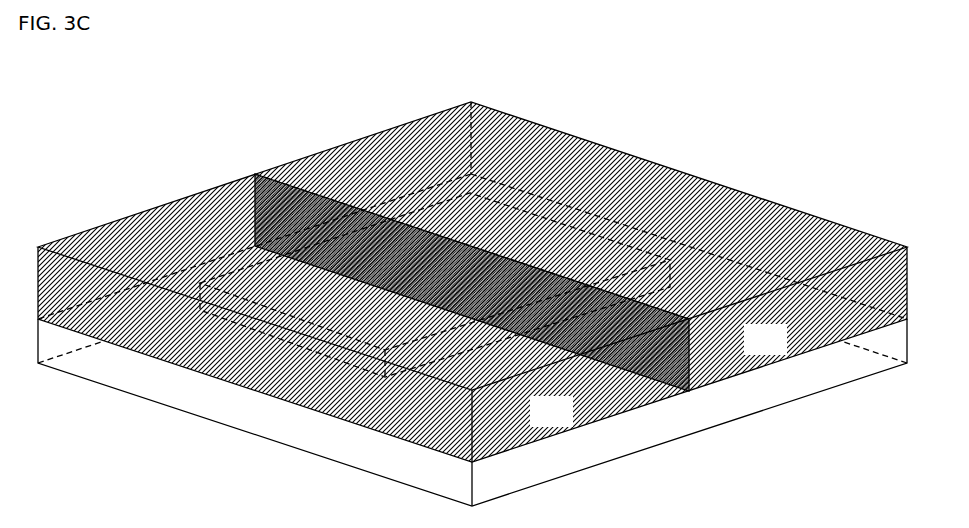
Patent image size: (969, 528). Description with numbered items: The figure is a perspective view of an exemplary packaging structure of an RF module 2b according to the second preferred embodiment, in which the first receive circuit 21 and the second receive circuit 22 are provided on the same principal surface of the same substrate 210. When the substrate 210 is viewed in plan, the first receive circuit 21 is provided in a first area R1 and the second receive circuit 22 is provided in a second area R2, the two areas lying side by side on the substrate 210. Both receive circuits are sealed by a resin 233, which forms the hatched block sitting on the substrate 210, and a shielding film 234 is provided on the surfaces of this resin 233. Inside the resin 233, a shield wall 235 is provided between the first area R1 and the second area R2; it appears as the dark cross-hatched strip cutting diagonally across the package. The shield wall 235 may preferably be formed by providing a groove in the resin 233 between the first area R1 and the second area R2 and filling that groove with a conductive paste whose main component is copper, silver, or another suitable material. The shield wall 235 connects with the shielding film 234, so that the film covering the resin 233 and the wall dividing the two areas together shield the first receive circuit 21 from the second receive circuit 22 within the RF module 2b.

The RF module 2b is at (472, 295).
The first receive circuit 21 is at (165, 216).
The second receive circuit 22 is at (394, 141).
The substrate 210 is at (690, 412).
The resin 233 is at (560, 140).
The shielding film 234 is at (350, 165).
The shield wall 235 is at (226, 184).
The first area R1 is at (568, 423).
The second area R2 is at (781, 351).